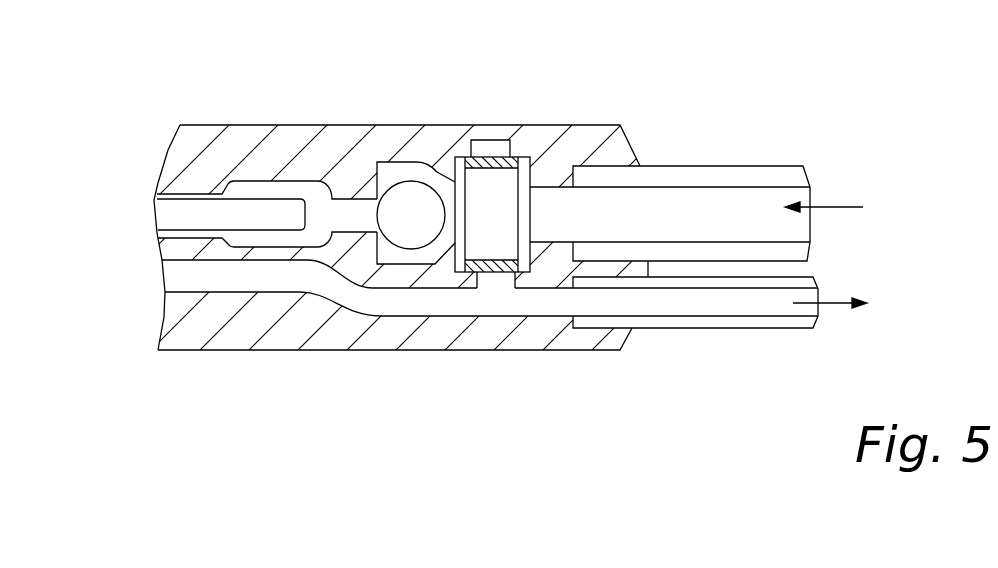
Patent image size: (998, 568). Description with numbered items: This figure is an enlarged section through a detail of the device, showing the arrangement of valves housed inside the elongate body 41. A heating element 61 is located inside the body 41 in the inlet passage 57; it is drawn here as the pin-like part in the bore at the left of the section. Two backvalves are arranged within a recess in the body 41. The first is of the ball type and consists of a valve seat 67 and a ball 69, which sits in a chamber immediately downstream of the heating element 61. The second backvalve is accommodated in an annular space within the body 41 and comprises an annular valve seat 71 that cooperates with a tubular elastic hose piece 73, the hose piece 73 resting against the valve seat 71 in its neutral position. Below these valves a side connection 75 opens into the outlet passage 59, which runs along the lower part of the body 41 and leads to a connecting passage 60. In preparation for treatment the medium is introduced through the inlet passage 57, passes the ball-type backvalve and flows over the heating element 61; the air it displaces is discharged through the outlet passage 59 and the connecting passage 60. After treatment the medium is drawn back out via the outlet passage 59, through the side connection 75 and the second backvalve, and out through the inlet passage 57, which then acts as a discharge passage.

The elongate body 41 is at (305, 320).
The inlet passage 57 is at (683, 207).
The outlet passage 59 is at (389, 302).
The connecting passage 60 is at (725, 298).
The heating element 61 is at (245, 210).
The valve seat 67 is at (417, 162).
The ball 69 is at (405, 207).
The annular valve seat 71 is at (522, 155).
The tubular elastic hose piece 73 is at (493, 156).
The side connection 75 is at (497, 283).